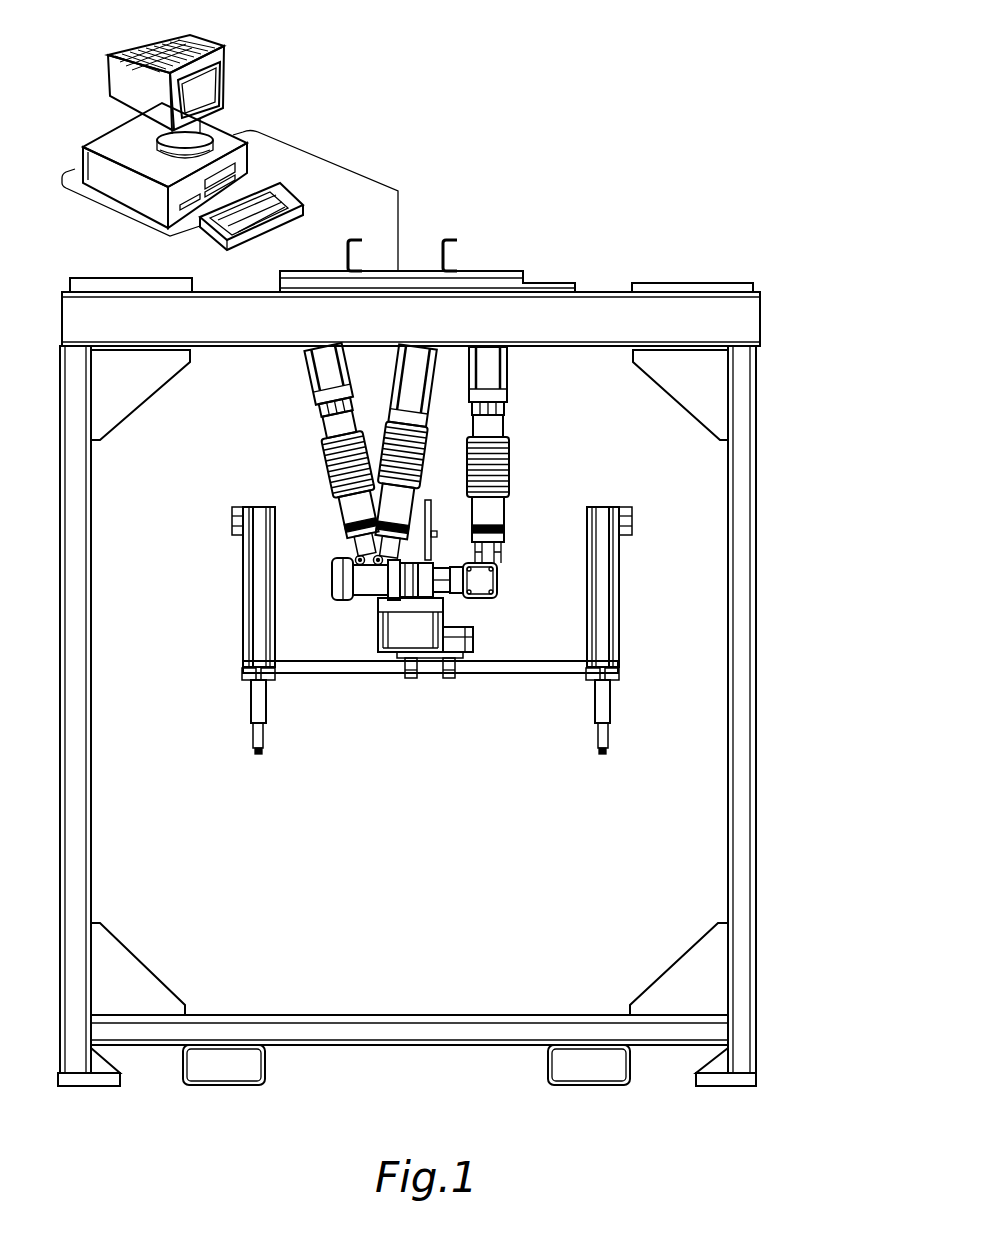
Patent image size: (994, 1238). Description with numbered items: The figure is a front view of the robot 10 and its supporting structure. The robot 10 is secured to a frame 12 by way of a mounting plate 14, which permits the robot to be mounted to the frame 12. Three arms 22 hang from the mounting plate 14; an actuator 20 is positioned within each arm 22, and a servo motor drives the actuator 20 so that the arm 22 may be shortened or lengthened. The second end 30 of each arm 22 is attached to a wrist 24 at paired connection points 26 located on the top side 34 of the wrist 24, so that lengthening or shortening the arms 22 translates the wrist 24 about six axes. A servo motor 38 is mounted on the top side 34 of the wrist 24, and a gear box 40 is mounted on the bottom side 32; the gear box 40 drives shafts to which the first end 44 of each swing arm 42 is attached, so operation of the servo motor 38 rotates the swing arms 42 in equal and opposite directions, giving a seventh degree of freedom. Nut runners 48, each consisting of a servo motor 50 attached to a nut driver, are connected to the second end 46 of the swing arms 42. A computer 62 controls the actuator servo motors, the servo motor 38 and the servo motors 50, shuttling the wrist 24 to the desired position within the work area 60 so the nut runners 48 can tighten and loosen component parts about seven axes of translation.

The robot 10 is at (657, 208).
The frame 12 is at (748, 311).
The mounting plate 14 is at (548, 285).
The actuator 20 is at (333, 465).
The arms 22 is at (318, 413).
The wrist 24 is at (483, 579).
The paired connection points 26 is at (358, 557).
The second end 30 is at (350, 538).
The bottom side 32 is at (455, 592).
The top side 34 is at (447, 572).
The servo motor 38 is at (405, 525).
The gear box 40 is at (385, 632).
The swing arms 42 is at (348, 673).
The first end 44 is at (405, 676).
The second end 46 is at (245, 668).
The nut runners 48 is at (254, 705).
The servo motor 50 is at (258, 576).
The work area 60 is at (683, 790).
The computer 62 is at (122, 148).